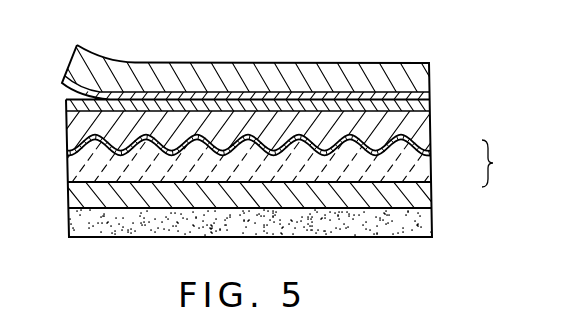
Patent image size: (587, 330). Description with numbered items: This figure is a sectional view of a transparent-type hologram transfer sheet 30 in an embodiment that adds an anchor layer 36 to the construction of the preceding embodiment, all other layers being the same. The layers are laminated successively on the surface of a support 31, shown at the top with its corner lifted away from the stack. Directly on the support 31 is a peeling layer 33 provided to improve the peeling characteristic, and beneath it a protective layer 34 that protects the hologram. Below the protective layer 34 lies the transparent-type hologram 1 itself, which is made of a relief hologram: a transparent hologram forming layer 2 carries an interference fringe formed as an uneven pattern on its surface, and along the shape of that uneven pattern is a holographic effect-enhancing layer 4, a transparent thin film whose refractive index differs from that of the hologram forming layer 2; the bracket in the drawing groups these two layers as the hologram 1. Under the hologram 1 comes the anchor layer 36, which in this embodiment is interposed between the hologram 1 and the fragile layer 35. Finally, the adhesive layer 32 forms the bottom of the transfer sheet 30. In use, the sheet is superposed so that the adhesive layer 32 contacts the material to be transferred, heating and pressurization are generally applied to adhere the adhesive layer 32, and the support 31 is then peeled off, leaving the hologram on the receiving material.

The hologram transfer sheet 30 is at (388, 47).
The support 31 is at (423, 76).
The peeling layer 33 is at (423, 96).
The protective layer 34 is at (421, 107).
The transparent hologram forming layer 2 is at (421, 137).
The holographic effect-enhancing layer 4 is at (424, 155).
The transparent-type hologram 1 is at (499, 178).
The anchor layer 36 is at (424, 184).
The fragile layer 35 is at (424, 203).
The adhesive layer 32 is at (424, 232).